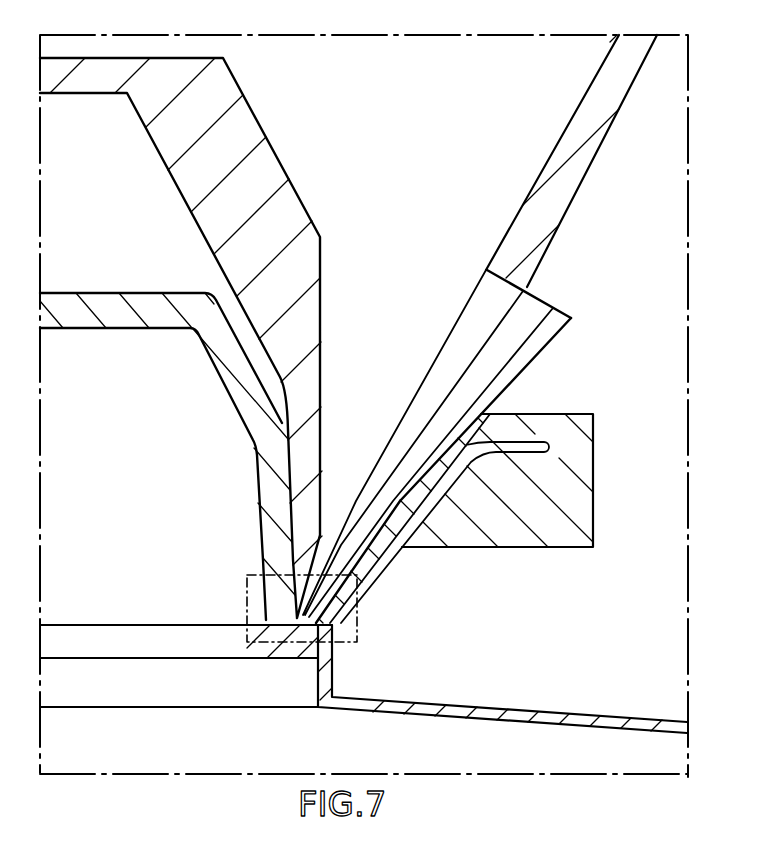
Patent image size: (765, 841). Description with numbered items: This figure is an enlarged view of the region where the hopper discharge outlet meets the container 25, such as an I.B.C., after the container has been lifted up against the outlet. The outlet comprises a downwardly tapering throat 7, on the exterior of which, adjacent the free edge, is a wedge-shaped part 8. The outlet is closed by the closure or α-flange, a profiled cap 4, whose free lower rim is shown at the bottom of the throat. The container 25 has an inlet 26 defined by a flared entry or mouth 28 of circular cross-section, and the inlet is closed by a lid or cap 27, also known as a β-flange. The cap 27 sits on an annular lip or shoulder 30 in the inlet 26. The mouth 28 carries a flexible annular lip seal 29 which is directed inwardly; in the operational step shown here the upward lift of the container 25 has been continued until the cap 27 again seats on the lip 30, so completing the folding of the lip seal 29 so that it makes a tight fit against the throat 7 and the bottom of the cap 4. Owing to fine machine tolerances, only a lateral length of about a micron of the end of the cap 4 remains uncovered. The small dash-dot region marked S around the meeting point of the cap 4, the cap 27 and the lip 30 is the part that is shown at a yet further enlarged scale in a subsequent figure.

The closure 4 is at (257, 163).
The lid or cap 27 is at (153, 294).
The tapering throat 7 is at (616, 117).
The wedge-shaped part 8 is at (453, 335).
The flexible annular lip seal 29 is at (520, 413).
The flared entry or mouth 28 is at (375, 576).
The inlet 26 is at (103, 686).
The annular lip or shoulder 30 is at (273, 660).
The container 25 is at (494, 759).
The part indicated S is at (358, 633).